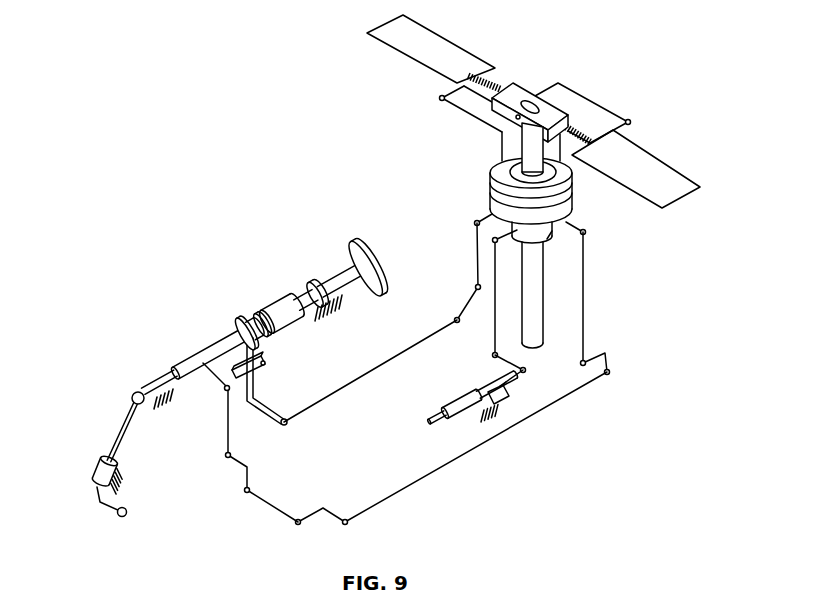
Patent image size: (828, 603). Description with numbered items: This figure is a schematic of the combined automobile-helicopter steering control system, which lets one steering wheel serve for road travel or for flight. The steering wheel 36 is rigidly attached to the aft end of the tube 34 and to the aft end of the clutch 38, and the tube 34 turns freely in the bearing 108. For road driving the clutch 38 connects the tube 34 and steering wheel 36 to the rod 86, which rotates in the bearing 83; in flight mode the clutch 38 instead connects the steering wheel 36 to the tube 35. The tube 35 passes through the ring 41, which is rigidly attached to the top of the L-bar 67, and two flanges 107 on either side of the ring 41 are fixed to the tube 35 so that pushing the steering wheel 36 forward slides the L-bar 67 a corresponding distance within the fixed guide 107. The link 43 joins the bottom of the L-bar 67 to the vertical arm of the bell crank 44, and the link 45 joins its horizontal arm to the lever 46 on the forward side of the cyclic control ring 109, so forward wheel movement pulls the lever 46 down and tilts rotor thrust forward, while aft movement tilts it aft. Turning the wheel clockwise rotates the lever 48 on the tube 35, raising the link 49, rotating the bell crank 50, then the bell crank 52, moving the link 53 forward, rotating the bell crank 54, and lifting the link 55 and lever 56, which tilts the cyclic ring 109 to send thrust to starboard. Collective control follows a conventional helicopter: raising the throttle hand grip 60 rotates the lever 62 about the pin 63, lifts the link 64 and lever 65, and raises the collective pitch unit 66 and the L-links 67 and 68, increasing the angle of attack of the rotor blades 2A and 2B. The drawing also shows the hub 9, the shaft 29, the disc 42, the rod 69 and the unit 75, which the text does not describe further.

The rotor blade 2A is at (457, 46).
The rotor blade 2B is at (650, 153).
The hub block 9 is at (521, 90).
The L-bar / L-link 67 is at (478, 118).
The L-link 68 is at (582, 95).
The cyclic control ring 109 is at (492, 203).
The main shaft 29 is at (544, 292).
The lever 46 is at (474, 222).
The link 45 is at (475, 262).
The bell crank 44 is at (455, 318).
The link 43 is at (400, 353).
The lever 56 is at (570, 223).
The link 55 is at (585, 290).
The lever 65 is at (499, 243).
The collective pitch unit 66 is at (549, 239).
The link 64 is at (494, 320).
The lever 62 is at (492, 358).
The pin 63 is at (520, 362).
The throttle control hand grip 60 is at (446, 415).
The bell crank 54 is at (610, 360).
The link 53 is at (398, 492).
The bell crank 52 is at (323, 508).
The bell crank 50 is at (243, 481).
The link 49 is at (226, 437).
The lever 48 is at (216, 378).
The flange / fixed guide 107 is at (268, 364).
The control rod 69 is at (123, 428).
The actuator 75 is at (97, 465).
The rod 86 is at (145, 390).
The bearing 83 is at (158, 385).
The tube 35 is at (207, 350).
The disc 42 is at (237, 333).
The ring 41 is at (247, 327).
The clutch 38 is at (275, 300).
The bearing 108 is at (317, 280).
The tube 34 is at (342, 275).
The steering wheel 36 is at (360, 242).